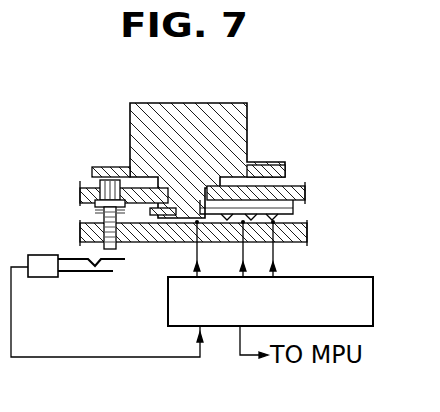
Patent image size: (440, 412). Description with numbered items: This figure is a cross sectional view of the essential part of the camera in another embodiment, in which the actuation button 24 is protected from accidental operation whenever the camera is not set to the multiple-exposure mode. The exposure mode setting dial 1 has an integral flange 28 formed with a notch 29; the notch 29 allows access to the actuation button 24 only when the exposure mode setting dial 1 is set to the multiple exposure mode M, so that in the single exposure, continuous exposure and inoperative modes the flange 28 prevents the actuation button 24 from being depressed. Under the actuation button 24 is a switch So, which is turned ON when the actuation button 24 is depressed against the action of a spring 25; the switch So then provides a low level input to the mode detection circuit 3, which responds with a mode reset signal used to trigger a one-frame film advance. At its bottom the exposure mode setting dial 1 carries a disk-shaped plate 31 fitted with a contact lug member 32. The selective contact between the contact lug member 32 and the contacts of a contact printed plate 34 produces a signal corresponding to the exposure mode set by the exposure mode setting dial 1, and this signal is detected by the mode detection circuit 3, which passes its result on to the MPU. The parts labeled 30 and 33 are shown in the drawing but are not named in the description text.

The exposure mode setting dial 1 is at (224, 101).
The mode detection circuit 3 is at (362, 274).
The actuation button 24 is at (93, 174).
The spring 25 is at (95, 205).
The flange 28 is at (278, 164).
The notch 29 is at (123, 166).
The spacer plate 30 is at (290, 185).
The disk-shaped plate 31 is at (295, 208).
The contact lug member 32 is at (236, 225).
The base plate 33 is at (304, 234).
The contact printed plate 34 is at (195, 229).
The switch So is at (89, 280).